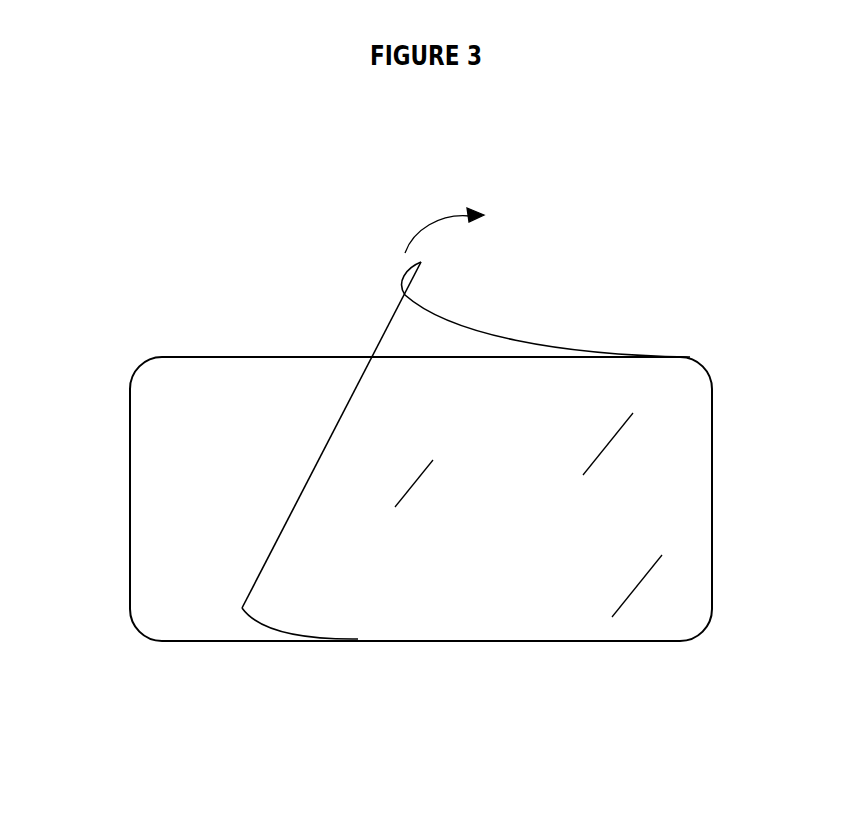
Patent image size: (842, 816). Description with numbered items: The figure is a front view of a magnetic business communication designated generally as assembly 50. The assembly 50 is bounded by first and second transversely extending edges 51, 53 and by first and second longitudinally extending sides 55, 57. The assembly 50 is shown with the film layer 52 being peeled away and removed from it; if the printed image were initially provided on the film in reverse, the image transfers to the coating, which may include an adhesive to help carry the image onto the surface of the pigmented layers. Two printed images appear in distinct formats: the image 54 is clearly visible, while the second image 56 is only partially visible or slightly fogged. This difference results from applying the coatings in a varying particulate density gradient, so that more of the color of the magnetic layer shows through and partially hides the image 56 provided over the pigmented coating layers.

The magnetic business communication 50 is at (130, 620).
The first transversely extending edge 51 is at (553, 641).
The film layer 52 is at (457, 313).
The second transversely extending edge 53 is at (319, 357).
The image 54 is at (285, 393).
The first longitudinally extending side 55 is at (712, 473).
The second image 56 is at (308, 585).
The second longitudinally extending side 57 is at (130, 473).